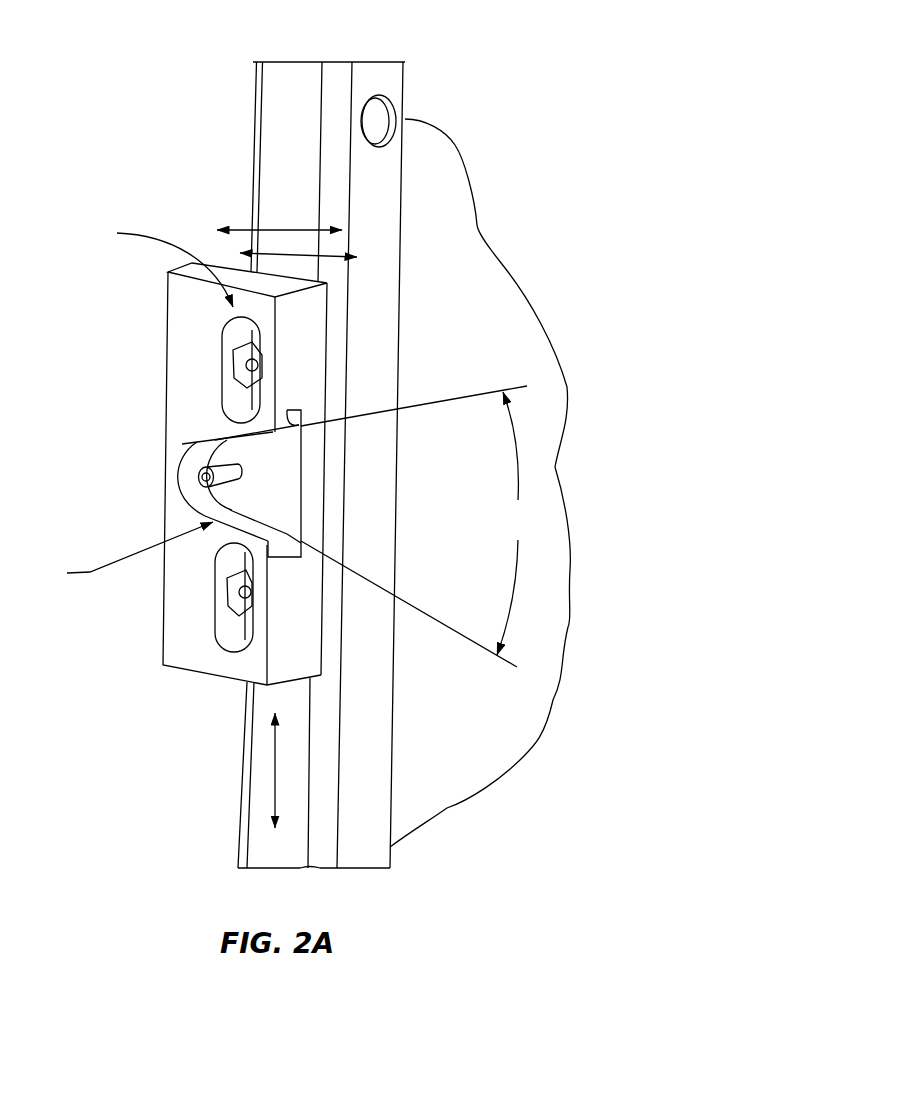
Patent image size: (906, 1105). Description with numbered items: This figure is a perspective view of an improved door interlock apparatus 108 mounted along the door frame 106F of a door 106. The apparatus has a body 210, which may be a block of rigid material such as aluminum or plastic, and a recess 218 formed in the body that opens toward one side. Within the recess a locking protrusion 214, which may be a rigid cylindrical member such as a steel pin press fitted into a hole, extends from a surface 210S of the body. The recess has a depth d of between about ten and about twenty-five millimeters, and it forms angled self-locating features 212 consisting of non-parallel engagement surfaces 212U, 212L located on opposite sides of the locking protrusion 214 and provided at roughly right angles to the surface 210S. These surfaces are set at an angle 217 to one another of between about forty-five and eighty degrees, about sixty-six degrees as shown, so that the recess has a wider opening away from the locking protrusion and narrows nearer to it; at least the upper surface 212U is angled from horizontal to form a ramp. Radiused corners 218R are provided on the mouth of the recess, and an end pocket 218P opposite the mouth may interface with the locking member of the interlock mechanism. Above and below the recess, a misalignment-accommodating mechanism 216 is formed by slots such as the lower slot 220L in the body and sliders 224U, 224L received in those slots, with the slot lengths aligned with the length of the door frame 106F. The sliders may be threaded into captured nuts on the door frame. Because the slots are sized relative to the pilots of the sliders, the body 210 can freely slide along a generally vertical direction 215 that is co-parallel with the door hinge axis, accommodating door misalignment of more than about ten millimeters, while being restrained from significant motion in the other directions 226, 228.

The door 106 is at (404, 465).
The door frame 106F is at (290, 102).
The door interlock apparatus 108 is at (190, 212).
The body 210 is at (188, 387).
The surface of the body 210S is at (272, 455).
The angled self-locating features 212 is at (243, 504).
The upper engagement surface 212U is at (228, 438).
The lower engagement surface 212L is at (247, 523).
The locking protrusion 214 is at (207, 477).
The direction 215 is at (275, 767).
The misalignment-accommodating mechanism 216 is at (153, 264).
The angle 217 is at (419, 526).
The recess 218 is at (185, 455).
The end pocket 218P is at (187, 468).
The radiused corners 218R is at (291, 413).
The lower slot 220L is at (222, 313).
The upper slider 224U is at (250, 362).
The lower slider 224L is at (237, 600).
The direction 226 is at (234, 295).
The direction 228 is at (313, 258).
The depth of the recess d is at (132, 553).